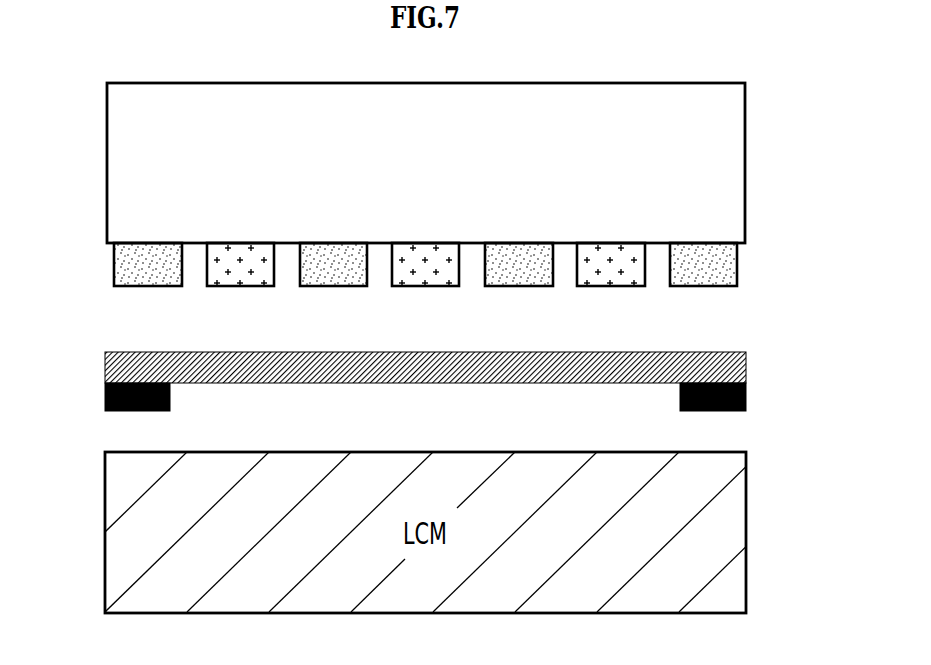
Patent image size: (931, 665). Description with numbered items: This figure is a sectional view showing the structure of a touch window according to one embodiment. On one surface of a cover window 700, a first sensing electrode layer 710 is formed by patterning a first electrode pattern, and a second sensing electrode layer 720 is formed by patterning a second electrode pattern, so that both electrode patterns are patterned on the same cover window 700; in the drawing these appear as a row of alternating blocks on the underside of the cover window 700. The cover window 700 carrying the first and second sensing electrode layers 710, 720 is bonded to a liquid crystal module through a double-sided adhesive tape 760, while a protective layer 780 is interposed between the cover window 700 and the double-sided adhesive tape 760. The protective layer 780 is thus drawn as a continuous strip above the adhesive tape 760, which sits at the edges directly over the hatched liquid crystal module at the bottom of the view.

The cover window 700 is at (733, 156).
The first sensing electrode layer 710 is at (243, 272).
The second sensing electrode layer 720 is at (120, 267).
The protective layer 780 is at (748, 360).
The double-sided adhesive tape 760 is at (748, 397).